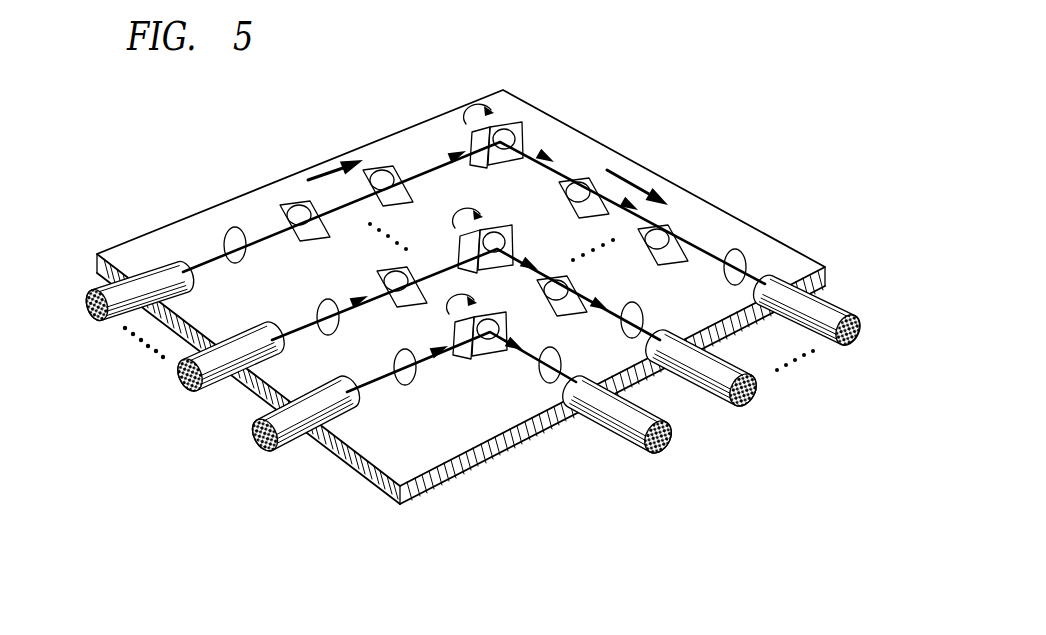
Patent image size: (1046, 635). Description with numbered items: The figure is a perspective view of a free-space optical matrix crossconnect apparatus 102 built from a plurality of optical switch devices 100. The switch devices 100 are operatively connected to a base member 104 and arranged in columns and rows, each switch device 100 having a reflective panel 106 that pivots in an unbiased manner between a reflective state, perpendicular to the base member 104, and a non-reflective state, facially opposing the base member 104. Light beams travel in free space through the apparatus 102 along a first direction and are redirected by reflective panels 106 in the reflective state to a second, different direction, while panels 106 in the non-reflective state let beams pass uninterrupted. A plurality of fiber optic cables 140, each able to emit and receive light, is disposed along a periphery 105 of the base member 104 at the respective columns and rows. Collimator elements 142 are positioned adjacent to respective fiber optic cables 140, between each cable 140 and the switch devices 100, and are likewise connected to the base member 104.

The optical switch device 100 is at (495, 228).
The free-space optical matrix crossconnect apparatus 102 is at (461, 297).
The base member 104 is at (612, 424).
The periphery 105 is at (248, 391).
The element carrier 106 is at (507, 202).
The fiber optic cable 140 is at (447, 395).
The collimator element 142 is at (497, 360).